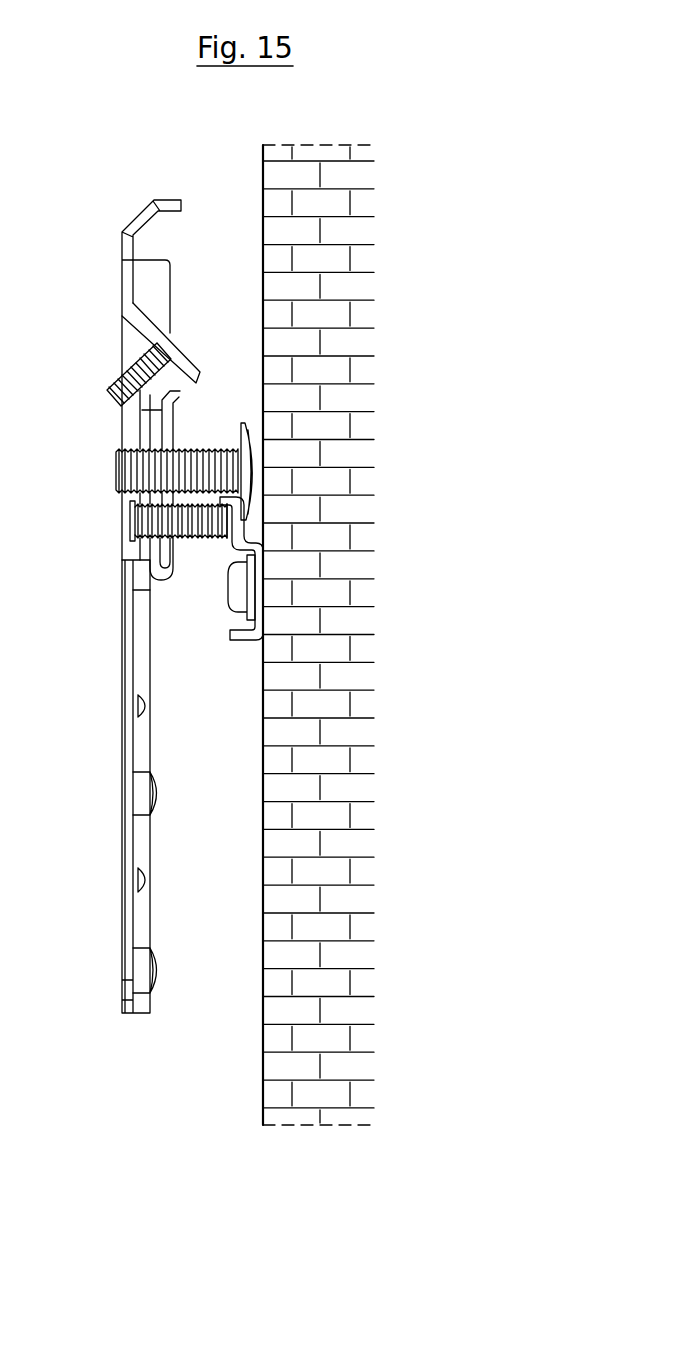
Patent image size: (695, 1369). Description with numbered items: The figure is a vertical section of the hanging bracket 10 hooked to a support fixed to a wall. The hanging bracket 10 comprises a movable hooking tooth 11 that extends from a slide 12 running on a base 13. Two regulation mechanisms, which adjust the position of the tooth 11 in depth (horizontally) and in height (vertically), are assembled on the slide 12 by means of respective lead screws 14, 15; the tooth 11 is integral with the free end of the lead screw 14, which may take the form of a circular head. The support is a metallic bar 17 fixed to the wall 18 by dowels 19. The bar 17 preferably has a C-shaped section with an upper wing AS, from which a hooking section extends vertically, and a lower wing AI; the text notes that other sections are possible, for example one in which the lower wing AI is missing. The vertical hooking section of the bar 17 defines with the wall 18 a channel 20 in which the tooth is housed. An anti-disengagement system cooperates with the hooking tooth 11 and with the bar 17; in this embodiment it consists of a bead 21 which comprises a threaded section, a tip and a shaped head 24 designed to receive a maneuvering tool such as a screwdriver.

The hanging bracket 10 is at (198, 1063).
The movable hooking tooth 11 is at (250, 422).
The slide 12 is at (157, 430).
The base 13 is at (122, 930).
The lead screw 14 is at (117, 470).
The lead screw 15 is at (122, 373).
The metallic bar 17 is at (264, 567).
The wall 18 is at (313, 223).
The dowels 19 is at (240, 597).
The channel 20 is at (258, 519).
The bead 21 is at (199, 540).
The shaped head 24 is at (130, 527).
The upper wing AS is at (265, 540).
The lower wing AI is at (243, 642).